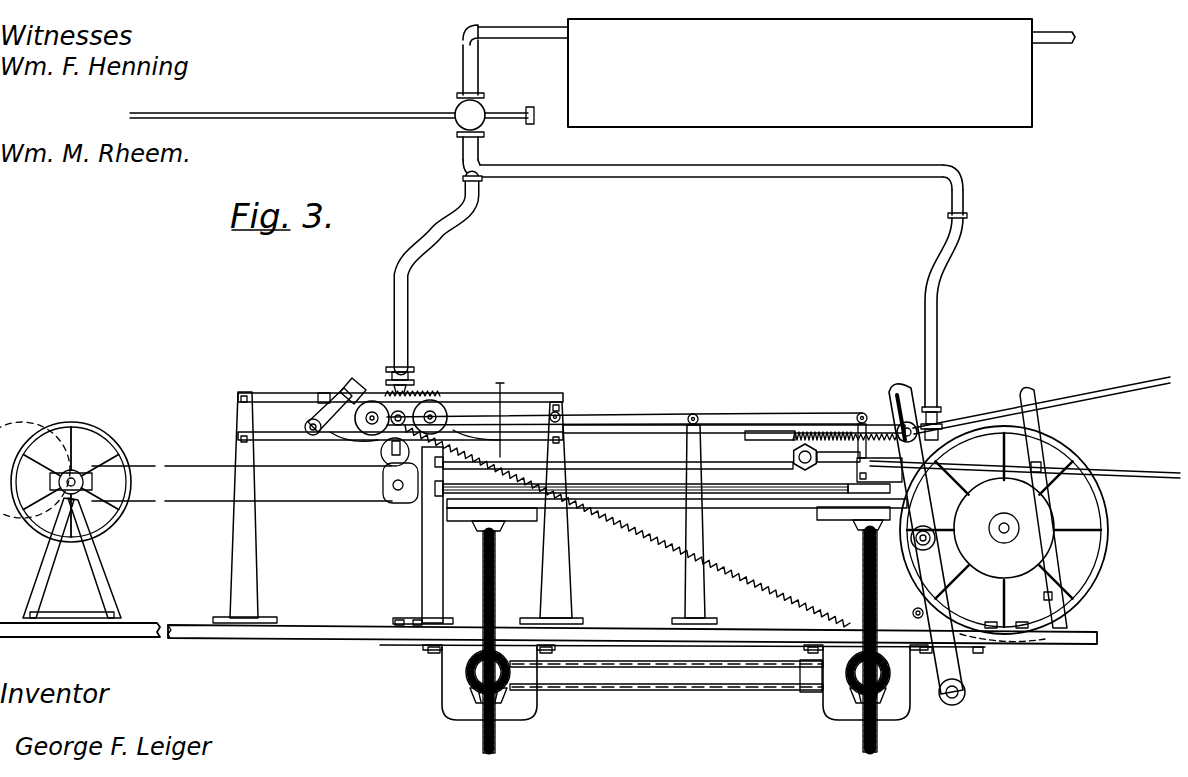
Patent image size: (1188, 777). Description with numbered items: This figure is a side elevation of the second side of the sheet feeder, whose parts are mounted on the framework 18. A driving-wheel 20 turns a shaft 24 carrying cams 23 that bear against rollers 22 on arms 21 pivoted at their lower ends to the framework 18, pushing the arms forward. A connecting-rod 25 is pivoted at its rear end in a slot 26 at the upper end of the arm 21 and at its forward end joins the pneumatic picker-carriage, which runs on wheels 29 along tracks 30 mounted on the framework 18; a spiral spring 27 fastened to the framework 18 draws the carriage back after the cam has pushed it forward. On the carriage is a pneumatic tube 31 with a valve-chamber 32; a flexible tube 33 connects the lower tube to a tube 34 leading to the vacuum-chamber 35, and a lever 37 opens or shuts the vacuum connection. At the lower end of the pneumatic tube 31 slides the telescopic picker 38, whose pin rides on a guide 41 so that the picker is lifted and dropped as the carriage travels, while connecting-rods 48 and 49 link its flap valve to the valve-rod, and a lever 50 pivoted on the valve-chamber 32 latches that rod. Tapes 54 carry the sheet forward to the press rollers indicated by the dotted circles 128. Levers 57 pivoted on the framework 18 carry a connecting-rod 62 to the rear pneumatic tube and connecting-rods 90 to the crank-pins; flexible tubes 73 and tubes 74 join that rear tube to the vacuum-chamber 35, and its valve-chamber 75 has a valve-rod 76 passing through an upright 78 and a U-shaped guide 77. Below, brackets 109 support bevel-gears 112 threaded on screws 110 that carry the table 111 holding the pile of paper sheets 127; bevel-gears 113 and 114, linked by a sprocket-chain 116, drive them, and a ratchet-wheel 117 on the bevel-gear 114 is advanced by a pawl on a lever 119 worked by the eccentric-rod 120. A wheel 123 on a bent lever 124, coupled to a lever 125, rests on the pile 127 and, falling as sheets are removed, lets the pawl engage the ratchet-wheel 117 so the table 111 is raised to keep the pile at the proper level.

The framework 18 is at (627, 629).
The driving-wheel 20 is at (1112, 571).
The arms 21 is at (934, 590).
The rollers 22 is at (929, 532).
The cams 23 is at (1004, 528).
The shaft 24 is at (1005, 524).
The connecting-rod 25 is at (674, 425).
The slot 26 is at (897, 390).
The spiral spring 27 is at (740, 571).
The wheels 29 is at (372, 400).
The tracks 30 is at (258, 392).
The pneumatic tube 31 is at (406, 381).
The valve-chamber 32 is at (392, 372).
The flexible tube 33 is at (404, 315).
The tube 34 is at (462, 150).
The vacuum-chamber 35 is at (821, 73).
The lever 37 is at (312, 113).
The telescopic tube or picker 38 is at (381, 460).
The guide or track 41 is at (304, 421).
The connecting-rod 48 is at (433, 496).
The connecting-rod 49 is at (466, 410).
The lever 50 is at (308, 392).
The tapes 54 is at (193, 501).
The levers 57 is at (1052, 578).
The connecting-rod 62 is at (1142, 464).
The flexible tubes 73 is at (938, 337).
The tubes 74 is at (733, 170).
The valve-chamber 75 is at (938, 430).
The valve-rod 76 is at (771, 441).
The U-shaped guide 77 is at (770, 466).
The upright 78 is at (862, 410).
The connecting-rods 90 is at (1101, 388).
The brackets 109 is at (444, 704).
The screws 110 is at (483, 573).
The table 111 is at (714, 508).
The bevel-gears 112 is at (500, 695).
The bevel-gear 113 is at (470, 672).
The bevel-gear 114 is at (812, 695).
The sprocket-chain 116 is at (705, 690).
The ratchet-wheel 117 is at (892, 690).
The lever 119 is at (913, 615).
The eccentric-rod 120 is at (993, 628).
The wheel 123 is at (470, 430).
The bent lever 124 is at (580, 418).
The lever 125 is at (813, 414).
The pile of paper sheets 127 is at (608, 486).
The rollers 128 is at (22, 421).